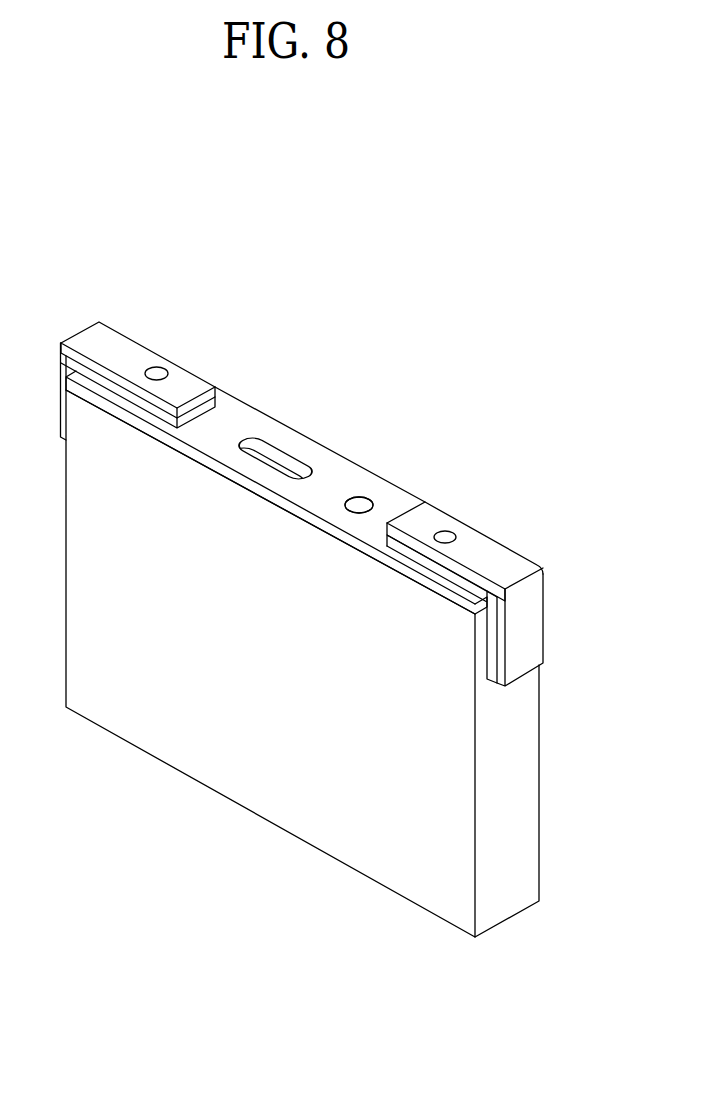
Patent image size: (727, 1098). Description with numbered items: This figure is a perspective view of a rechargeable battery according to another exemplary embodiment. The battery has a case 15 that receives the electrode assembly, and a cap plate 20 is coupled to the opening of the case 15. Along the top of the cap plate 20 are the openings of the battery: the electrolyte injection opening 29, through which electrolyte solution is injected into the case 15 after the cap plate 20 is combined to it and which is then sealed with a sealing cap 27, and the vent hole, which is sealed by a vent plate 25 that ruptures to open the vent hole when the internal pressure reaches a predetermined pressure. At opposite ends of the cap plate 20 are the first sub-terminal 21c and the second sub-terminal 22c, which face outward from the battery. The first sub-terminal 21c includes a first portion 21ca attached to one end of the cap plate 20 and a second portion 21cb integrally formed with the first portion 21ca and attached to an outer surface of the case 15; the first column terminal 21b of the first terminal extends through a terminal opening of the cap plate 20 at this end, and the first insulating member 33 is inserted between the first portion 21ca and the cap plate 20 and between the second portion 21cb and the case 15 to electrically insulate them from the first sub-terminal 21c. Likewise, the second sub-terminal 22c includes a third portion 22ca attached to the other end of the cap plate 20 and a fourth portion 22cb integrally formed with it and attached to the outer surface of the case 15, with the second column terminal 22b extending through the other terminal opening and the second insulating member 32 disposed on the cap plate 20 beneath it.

The case 15 is at (253, 778).
The cap plate 20 is at (247, 428).
The vent plate 25 is at (278, 453).
The sealing cap 27 is at (361, 503).
The electrolyte injection opening 29 is at (353, 501).
The second insulating member 32 is at (219, 408).
The first insulating member 33 is at (490, 647).
The second sub-terminal 22c is at (134, 332).
The third portion 22ca is at (108, 338).
The fourth portion 22cb is at (60, 357).
The second column terminal 22b is at (158, 371).
The first sub-terminal 21c is at (509, 575).
The first portion 21ca is at (493, 557).
The second portion 21cb is at (527, 612).
The first column terminal 21b is at (468, 505).